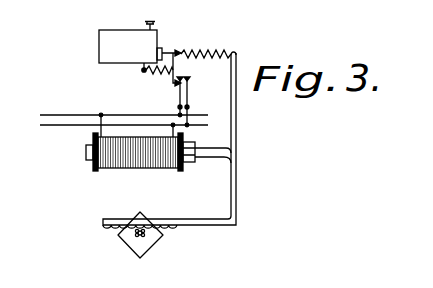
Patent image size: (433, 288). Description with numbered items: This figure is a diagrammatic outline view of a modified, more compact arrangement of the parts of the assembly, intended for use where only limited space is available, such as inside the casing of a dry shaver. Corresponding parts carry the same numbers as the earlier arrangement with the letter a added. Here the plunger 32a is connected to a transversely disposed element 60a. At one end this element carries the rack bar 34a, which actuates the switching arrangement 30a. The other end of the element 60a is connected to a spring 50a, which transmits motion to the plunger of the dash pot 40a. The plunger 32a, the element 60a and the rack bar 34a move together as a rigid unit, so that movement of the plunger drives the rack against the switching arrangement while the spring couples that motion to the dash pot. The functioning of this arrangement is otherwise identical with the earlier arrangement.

The switching arrangement 30a is at (140, 243).
The plunger 32a is at (85, 156).
The rack bar 34a is at (217, 226).
The dash pot 40a is at (86, 44).
The spring 50a is at (212, 50).
The transversely disposed element 60a is at (236, 125).